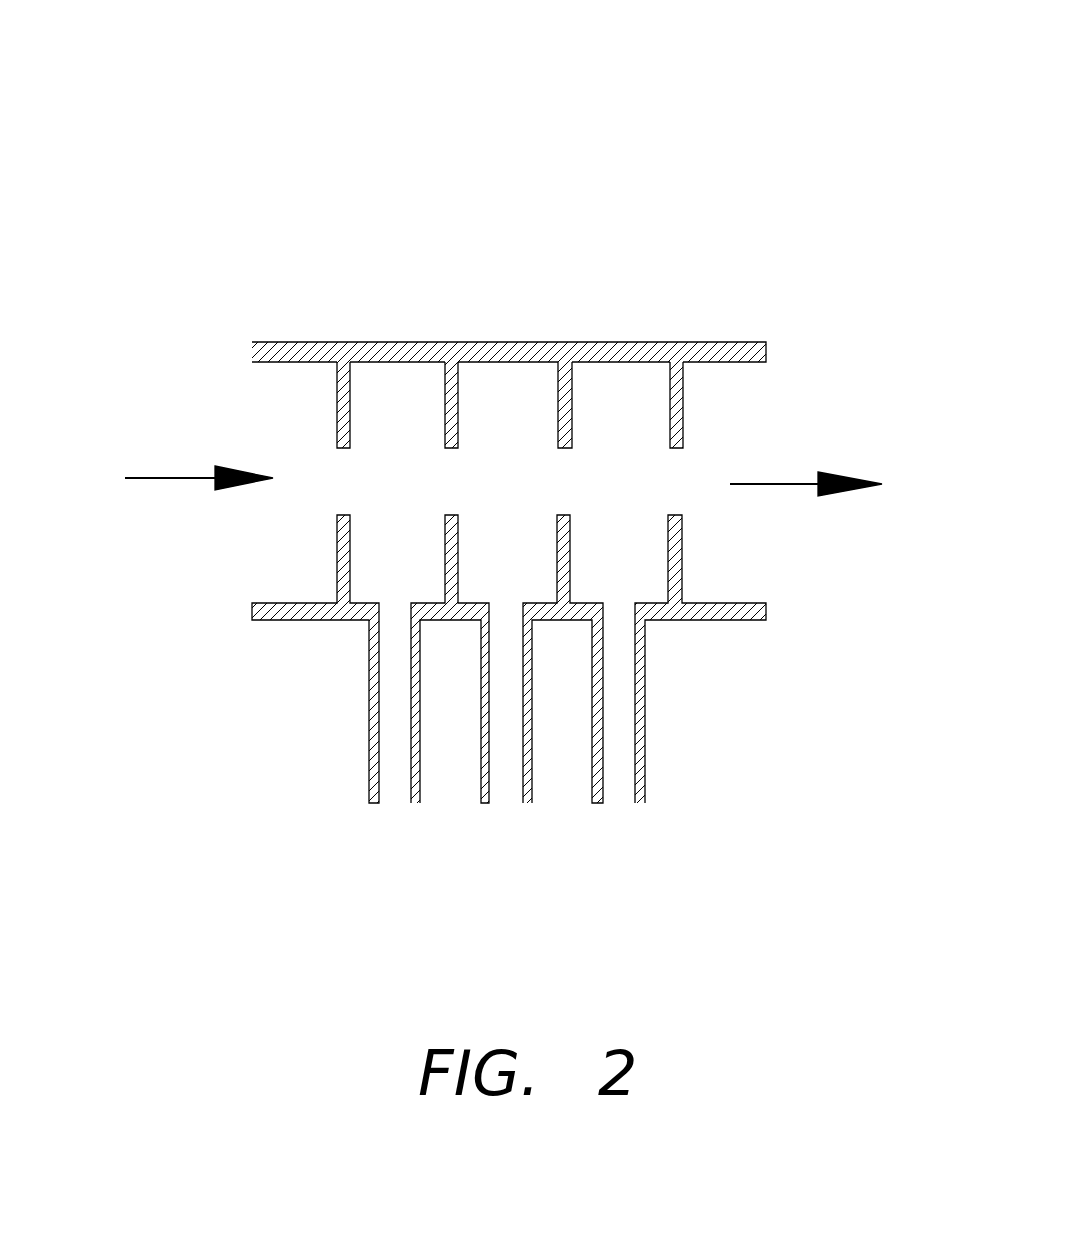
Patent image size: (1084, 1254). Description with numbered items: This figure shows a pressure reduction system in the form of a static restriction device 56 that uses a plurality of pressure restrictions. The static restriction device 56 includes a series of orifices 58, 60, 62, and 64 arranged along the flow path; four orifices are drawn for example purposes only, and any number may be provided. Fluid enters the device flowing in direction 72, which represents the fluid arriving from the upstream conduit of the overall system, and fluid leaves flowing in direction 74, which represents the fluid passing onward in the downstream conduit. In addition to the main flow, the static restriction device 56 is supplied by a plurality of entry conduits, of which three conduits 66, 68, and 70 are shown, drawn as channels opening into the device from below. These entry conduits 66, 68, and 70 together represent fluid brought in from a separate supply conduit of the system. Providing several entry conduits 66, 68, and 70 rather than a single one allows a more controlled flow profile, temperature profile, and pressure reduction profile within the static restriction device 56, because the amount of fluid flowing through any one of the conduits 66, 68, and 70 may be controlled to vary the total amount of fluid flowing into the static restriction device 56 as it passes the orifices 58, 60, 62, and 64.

The static restriction device 56 is at (633, 143).
The orifice 58 is at (348, 402).
The orifice 60 is at (458, 397).
The orifice 62 is at (572, 395).
The orifice 64 is at (683, 402).
The entry conduit 66 is at (397, 802).
The entry conduit 68 is at (507, 807).
The entry conduit 70 is at (615, 802).
The fluid flow direction 72 is at (178, 479).
The fluid flow direction 74 is at (826, 486).